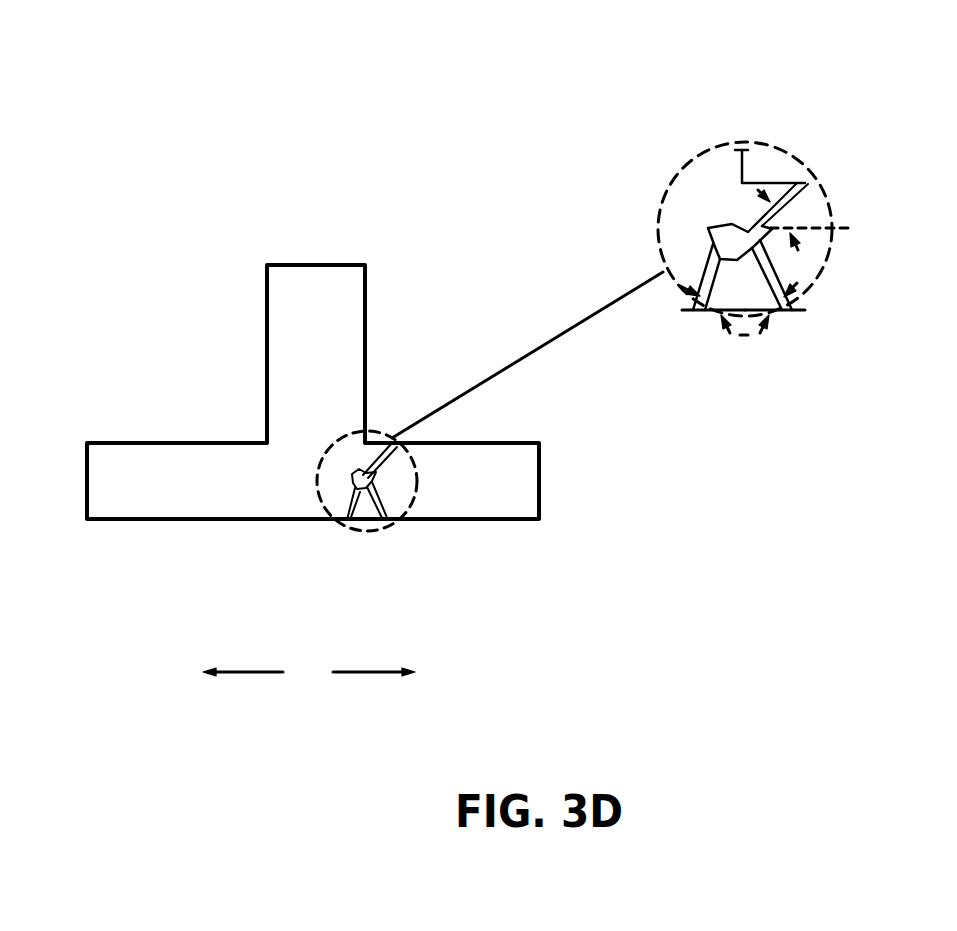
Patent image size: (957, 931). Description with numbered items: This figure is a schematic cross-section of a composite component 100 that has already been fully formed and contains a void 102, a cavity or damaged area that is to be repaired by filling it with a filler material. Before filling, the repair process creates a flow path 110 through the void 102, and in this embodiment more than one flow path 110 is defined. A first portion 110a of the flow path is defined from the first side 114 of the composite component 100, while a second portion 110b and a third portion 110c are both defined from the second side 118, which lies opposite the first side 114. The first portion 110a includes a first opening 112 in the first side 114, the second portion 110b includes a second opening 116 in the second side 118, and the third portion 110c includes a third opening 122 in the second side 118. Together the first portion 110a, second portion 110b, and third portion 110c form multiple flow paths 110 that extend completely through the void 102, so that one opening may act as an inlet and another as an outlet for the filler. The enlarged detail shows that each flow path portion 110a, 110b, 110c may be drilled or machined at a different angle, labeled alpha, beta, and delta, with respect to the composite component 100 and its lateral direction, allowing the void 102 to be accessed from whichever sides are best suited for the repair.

The composite component 100 is at (720, 167).
The void 102 is at (358, 462).
The flow path 110 is at (396, 495).
The first portion of the flow path 110a is at (748, 201).
The second portion of the flow path 110b is at (696, 275).
The third portion of the flow path 110c is at (774, 274).
The first opening 112 is at (498, 432).
The first side 114 is at (770, 172).
The second opening 116 is at (694, 322).
The second side 118 is at (168, 530).
The third opening 122 is at (792, 318).